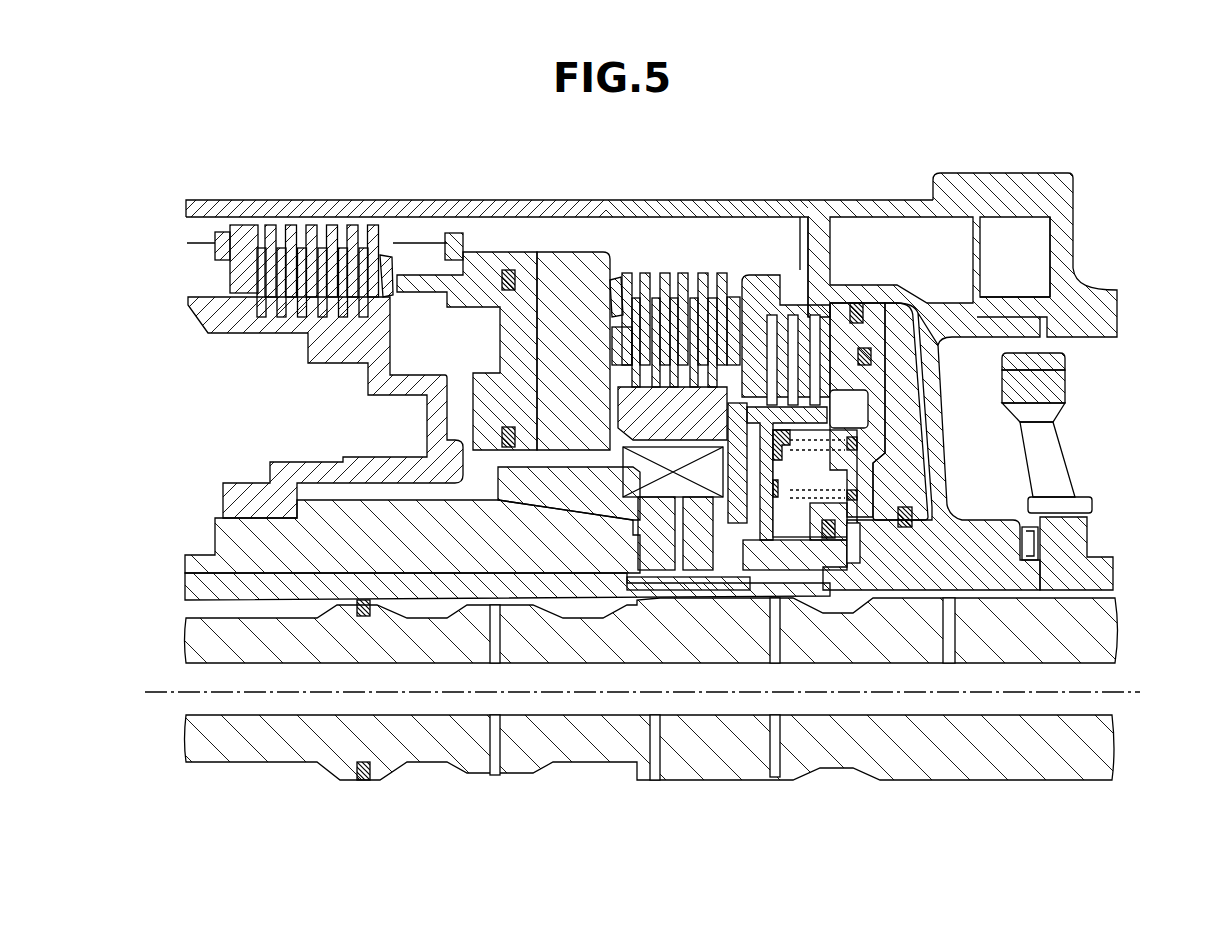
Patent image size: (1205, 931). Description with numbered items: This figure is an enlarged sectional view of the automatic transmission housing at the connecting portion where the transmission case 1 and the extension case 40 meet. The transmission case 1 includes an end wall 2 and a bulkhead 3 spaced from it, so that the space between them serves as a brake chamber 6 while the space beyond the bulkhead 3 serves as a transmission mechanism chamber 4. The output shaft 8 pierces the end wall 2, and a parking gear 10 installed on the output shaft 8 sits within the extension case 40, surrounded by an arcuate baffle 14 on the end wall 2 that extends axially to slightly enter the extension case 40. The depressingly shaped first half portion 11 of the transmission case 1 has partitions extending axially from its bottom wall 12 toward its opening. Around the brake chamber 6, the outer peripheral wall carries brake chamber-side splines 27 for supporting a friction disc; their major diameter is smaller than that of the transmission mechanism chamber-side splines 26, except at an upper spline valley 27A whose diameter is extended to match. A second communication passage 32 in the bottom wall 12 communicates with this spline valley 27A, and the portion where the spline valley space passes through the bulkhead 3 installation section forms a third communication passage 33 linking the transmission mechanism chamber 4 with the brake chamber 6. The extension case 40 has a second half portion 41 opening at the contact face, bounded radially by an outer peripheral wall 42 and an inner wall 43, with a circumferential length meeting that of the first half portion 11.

The transmission case 1 is at (298, 193).
The end wall 2 is at (940, 433).
The bulkhead 3 is at (580, 325).
The transmission mechanism chamber 4 is at (250, 398).
The brake chamber 6 is at (830, 472).
The output shaft 8 is at (1118, 626).
The parking gear 10 is at (1078, 440).
The first half portion 11 is at (906, 232).
The bottom wall 12 is at (800, 238).
The baffle 14 is at (990, 325).
The transmission mechanism chamber-side splines 26 is at (412, 228).
The brake chamber-side splines 27 is at (722, 250).
The spline valley 27A is at (661, 232).
The second communication passage 32 is at (820, 258).
The third communication passage 33 is at (530, 235).
The extension case 40 is at (1083, 171).
The second half portion 41 is at (1004, 232).
The outer peripheral wall 42 is at (1042, 212).
The inner wall 43 is at (983, 300).